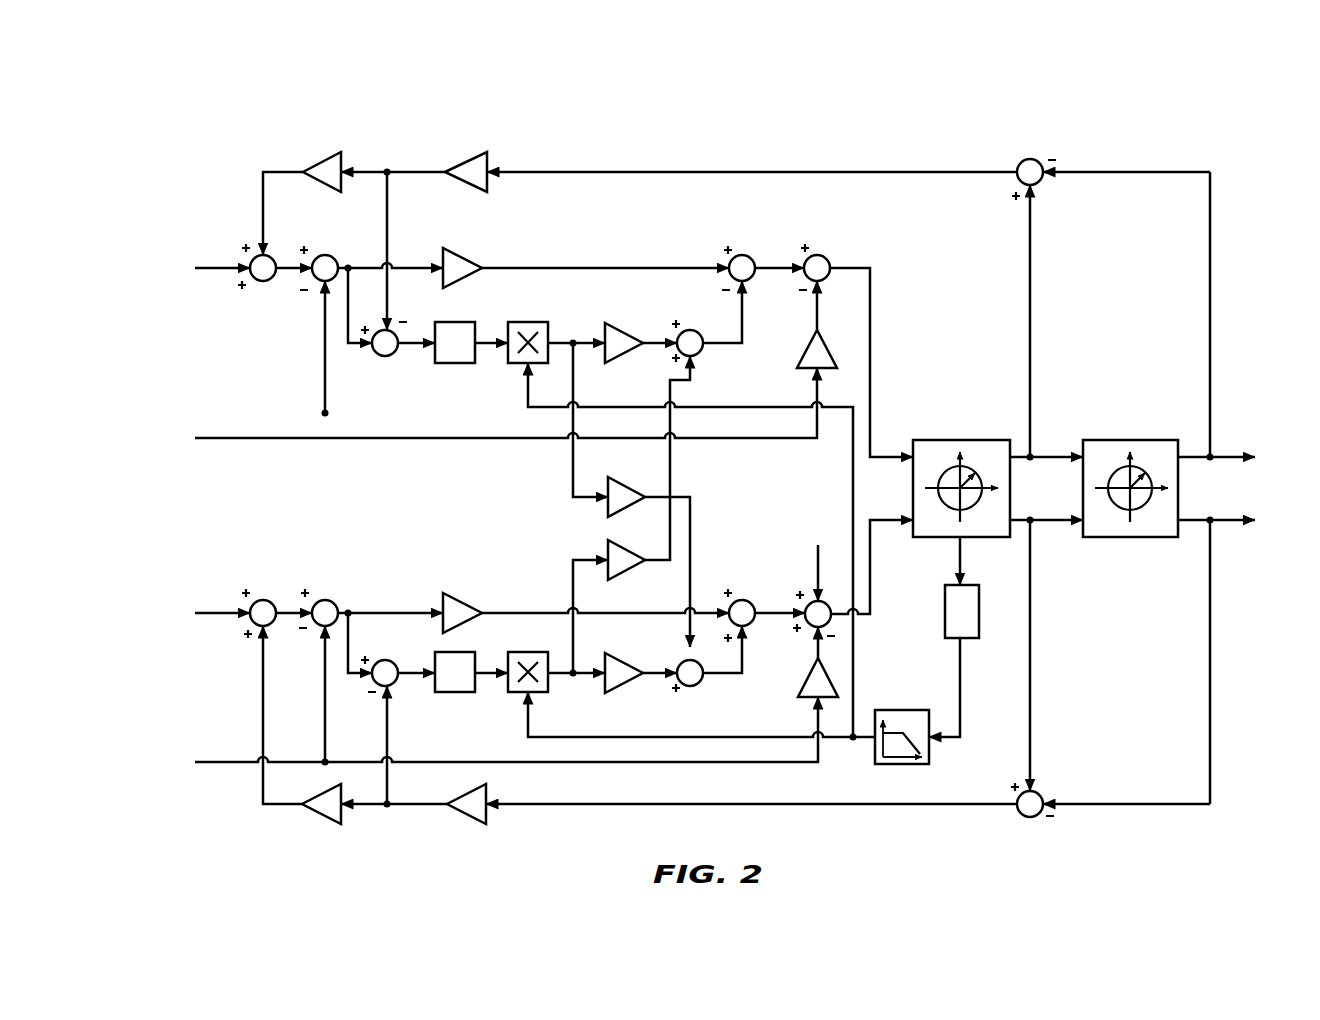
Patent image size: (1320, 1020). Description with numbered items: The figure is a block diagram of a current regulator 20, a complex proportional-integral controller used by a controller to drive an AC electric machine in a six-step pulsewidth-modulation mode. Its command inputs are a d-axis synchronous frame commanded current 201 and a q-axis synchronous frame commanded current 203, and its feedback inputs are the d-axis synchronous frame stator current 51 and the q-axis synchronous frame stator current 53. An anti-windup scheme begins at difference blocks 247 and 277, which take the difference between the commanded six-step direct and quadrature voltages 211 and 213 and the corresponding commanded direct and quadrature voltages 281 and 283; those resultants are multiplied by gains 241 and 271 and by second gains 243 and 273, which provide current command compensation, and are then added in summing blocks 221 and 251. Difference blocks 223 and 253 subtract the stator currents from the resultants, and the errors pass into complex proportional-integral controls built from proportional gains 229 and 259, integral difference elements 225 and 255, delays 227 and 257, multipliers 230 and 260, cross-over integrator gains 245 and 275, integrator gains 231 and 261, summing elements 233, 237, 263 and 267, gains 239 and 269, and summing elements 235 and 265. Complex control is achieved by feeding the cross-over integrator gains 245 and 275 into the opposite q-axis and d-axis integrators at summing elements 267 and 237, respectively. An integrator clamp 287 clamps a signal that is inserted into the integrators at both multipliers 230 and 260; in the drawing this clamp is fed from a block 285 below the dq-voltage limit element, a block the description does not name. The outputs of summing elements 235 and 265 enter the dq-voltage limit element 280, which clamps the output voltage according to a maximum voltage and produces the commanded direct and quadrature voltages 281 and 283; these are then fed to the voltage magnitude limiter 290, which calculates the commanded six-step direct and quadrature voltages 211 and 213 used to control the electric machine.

The current regulator 20 is at (205, 150).
The d-axis synchronous frame stator current 51 is at (191, 454).
The q-axis synchronous frame stator current 53 is at (191, 778).
The d-axis synchronous frame commanded current 201 is at (191, 284).
The q-axis synchronous frame commanded current 203 is at (191, 629).
The commanded six-step direct voltage 211 is at (1222, 457).
The commanded six-step quadrature voltage 213 is at (1222, 522).
The summing block 221 is at (257, 259).
The difference block 223 is at (332, 256).
The integral difference element 225 is at (378, 357).
The delay 227 is at (455, 364).
The proportional gain 229 is at (470, 253).
The multiplier 230 is at (530, 322).
The integrator gain 231 is at (625, 330).
The summing element 233 is at (752, 257).
The summing element 235 is at (827, 257).
The summing element 237 is at (700, 355).
The gain 239 is at (805, 345).
The gain 241 is at (463, 158).
The second gain 243 is at (320, 152).
The cross-over integrator gain 245 is at (635, 485).
The difference block 247 is at (1020, 160).
The summing block 251 is at (258, 600).
The difference block 253 is at (331, 600).
The integral difference element 255 is at (374, 684).
The delay 257 is at (455, 693).
The proportional gain 259 is at (462, 600).
The multiplier 260 is at (676, 705).
The integrator gain 261 is at (625, 683).
The summing element 263 is at (752, 600).
The summing element 265 is at (834, 542).
The summing element 267 is at (700, 686).
The gain 269 is at (806, 681).
The gain 271 is at (465, 818).
The second gain 273 is at (322, 818).
The cross-over integrator gain 275 is at (632, 580).
The difference block 277 is at (1020, 818).
The dq-voltage limit element 280 is at (960, 440).
The commanded direct voltage 281 is at (1052, 457).
The commanded quadrature voltage 283 is at (1052, 522).
The block 285 is at (972, 638).
The integrator clamp 287 is at (930, 752).
The voltage magnitude limiter 290 is at (1130, 440).